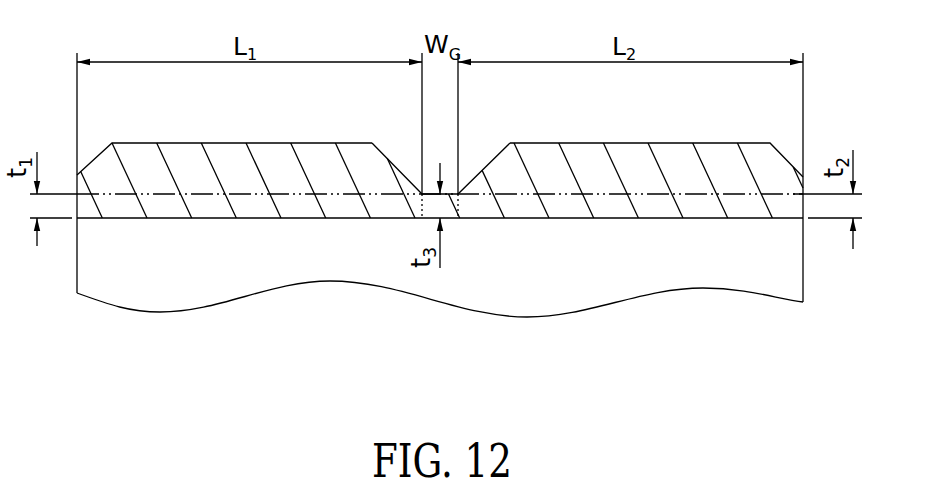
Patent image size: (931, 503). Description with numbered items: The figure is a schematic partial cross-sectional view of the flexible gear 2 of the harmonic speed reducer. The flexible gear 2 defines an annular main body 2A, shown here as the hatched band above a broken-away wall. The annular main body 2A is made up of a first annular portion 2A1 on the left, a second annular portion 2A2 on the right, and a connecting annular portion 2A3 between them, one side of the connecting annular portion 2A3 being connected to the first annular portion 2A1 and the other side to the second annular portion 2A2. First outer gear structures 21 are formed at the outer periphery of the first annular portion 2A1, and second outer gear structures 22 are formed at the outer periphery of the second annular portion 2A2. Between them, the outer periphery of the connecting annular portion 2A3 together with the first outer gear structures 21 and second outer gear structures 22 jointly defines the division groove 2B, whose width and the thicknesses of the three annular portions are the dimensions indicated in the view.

The flexible gear 2 is at (805, 9).
The first outer gear structures 21 is at (235, 163).
The second outer gear structures 22 is at (670, 163).
The division groove 2B is at (467, 172).
The annular main body 2A is at (440, 290).
The first annular portion 2A1 is at (348, 207).
The second annular portion 2A2 is at (665, 285).
The connecting annular portion 2A3 is at (447, 210).